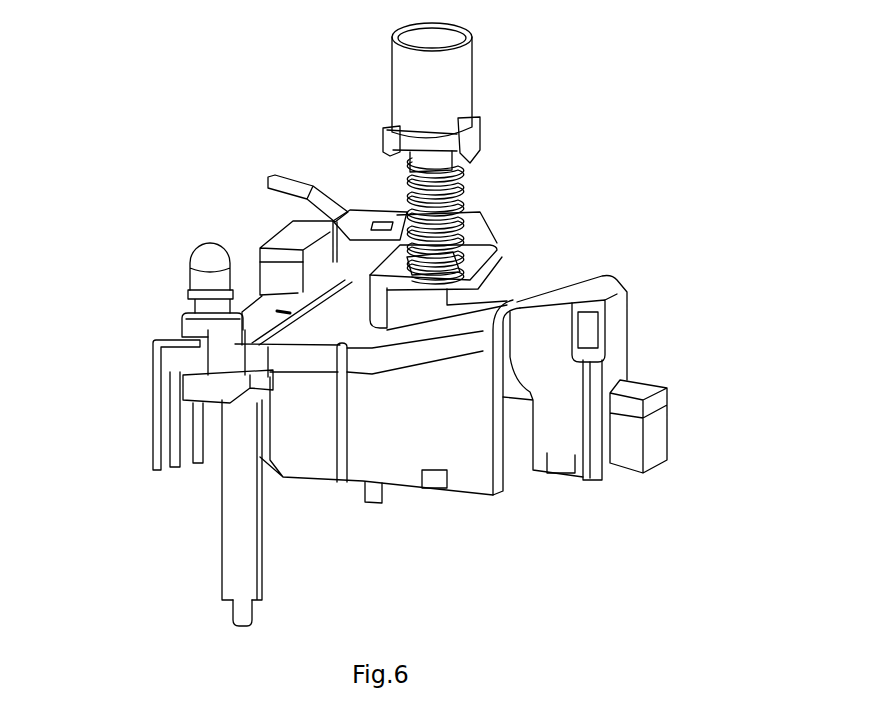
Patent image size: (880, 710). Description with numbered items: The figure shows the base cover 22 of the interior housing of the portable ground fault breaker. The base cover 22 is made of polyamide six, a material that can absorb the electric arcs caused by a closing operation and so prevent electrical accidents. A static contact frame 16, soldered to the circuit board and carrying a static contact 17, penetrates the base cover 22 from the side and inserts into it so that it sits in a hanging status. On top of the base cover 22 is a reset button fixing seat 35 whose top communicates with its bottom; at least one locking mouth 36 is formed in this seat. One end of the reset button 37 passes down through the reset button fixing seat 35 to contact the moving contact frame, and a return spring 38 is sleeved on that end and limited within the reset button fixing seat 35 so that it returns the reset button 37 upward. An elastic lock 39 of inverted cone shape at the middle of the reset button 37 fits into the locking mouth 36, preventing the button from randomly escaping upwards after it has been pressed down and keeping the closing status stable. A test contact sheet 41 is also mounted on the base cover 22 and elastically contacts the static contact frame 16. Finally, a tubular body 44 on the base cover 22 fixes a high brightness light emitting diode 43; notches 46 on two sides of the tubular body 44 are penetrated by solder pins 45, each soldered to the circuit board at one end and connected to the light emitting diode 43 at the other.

The static contact frame 16 is at (243, 468).
The static contact 17 is at (237, 612).
The base cover 22 is at (430, 422).
The reset button fixing seat 35 is at (400, 303).
The locking mouth 36 is at (460, 263).
The reset button 37 is at (423, 110).
The return spring 38 is at (453, 236).
The elastic lock 39 is at (477, 143).
The test contact sheet 41 is at (330, 200).
The high brightness light emitting diode 43 is at (215, 280).
The tubular body 44 is at (212, 355).
The solder pin 45 is at (158, 425).
The notch 46 is at (193, 332).